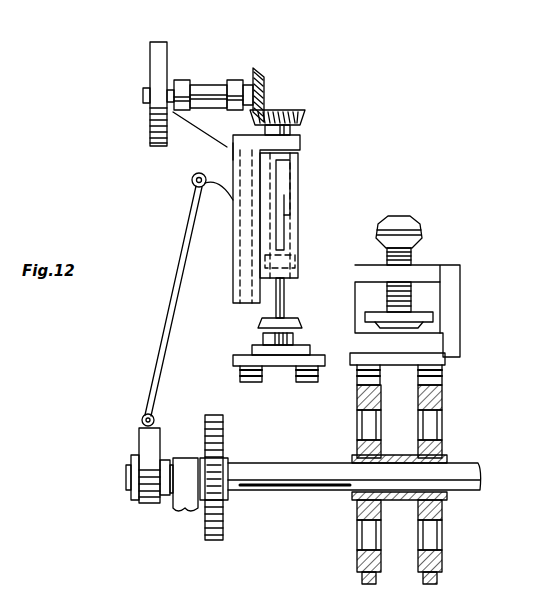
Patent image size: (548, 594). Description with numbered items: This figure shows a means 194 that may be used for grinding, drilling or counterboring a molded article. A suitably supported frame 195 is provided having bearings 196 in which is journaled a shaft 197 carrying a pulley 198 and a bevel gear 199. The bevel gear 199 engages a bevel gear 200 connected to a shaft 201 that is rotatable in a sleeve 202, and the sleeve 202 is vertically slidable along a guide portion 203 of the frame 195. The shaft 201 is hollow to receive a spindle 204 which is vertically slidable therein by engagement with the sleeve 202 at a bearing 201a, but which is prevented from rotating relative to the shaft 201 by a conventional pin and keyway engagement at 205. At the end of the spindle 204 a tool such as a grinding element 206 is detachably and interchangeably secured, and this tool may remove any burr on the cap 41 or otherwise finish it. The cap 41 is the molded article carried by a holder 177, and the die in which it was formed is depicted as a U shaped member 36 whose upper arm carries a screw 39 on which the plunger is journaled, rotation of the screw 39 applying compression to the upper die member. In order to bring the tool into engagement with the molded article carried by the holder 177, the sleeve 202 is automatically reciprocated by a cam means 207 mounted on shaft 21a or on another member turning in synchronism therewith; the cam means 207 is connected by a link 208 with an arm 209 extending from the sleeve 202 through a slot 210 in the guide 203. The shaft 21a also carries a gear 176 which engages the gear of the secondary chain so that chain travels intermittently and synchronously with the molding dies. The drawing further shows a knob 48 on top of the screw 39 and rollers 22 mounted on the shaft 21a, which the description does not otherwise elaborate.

The pulley 198 is at (150, 58).
The bearings 196 is at (184, 80).
The shaft 197 is at (210, 88).
The bevel gear 199 is at (258, 72).
The bevel gear 200 is at (303, 112).
The guide portion 203 is at (240, 263).
The sleeve 202 is at (300, 166).
The shaft 201 is at (290, 185).
The pin and keyway engagement 205 is at (292, 202).
The bearing 201a is at (292, 258).
The slot 210 is at (232, 152).
The arm 209 is at (192, 180).
The frame 195 is at (233, 200).
The link 208 is at (170, 300).
The grinding, drilling or counterboring means 194 is at (130, 350).
The spindle 204 is at (286, 312).
The grinding element 206 is at (300, 322).
The cap 41 is at (294, 339).
The holder 177 is at (255, 352).
The U shaped member 36 is at (460, 309).
The screw 39 is at (412, 262).
The knob 48 is at (420, 228).
The roller 22 is at (444, 394).
The shaft 21a is at (282, 490).
The gear 176 is at (222, 541).
The cam means 207 is at (138, 437).